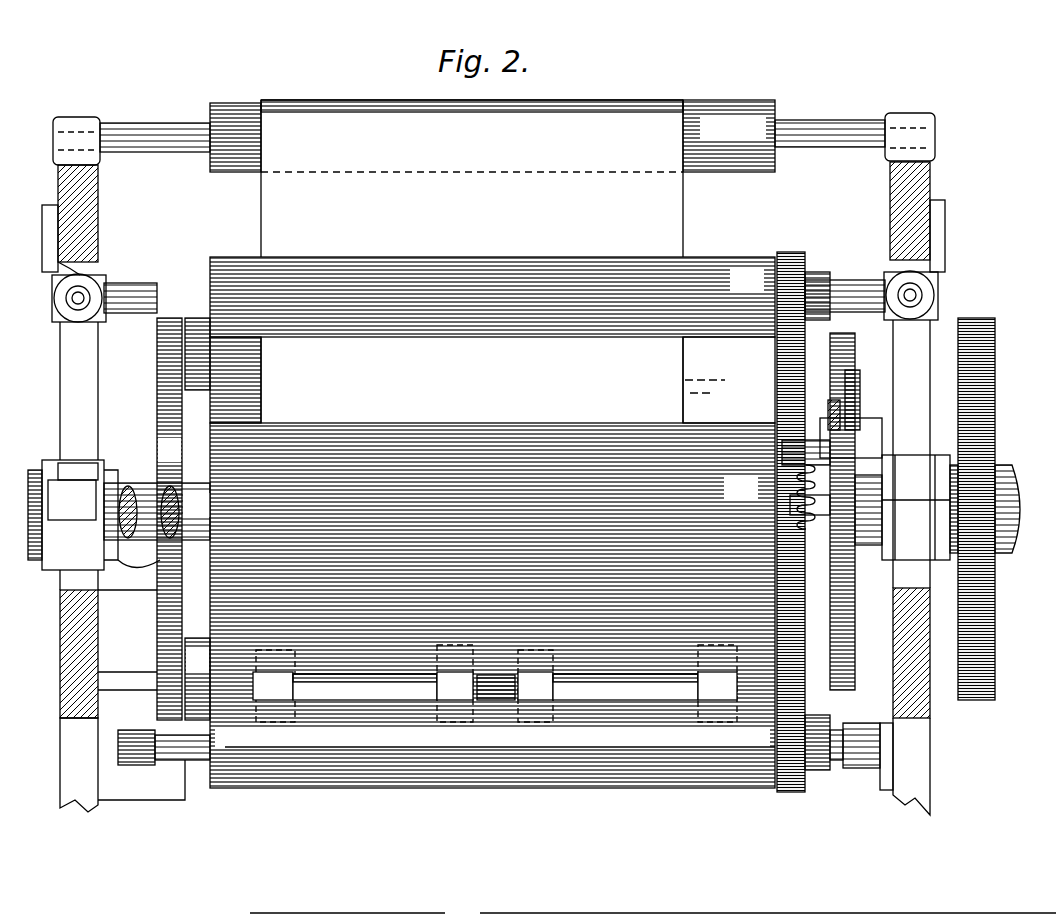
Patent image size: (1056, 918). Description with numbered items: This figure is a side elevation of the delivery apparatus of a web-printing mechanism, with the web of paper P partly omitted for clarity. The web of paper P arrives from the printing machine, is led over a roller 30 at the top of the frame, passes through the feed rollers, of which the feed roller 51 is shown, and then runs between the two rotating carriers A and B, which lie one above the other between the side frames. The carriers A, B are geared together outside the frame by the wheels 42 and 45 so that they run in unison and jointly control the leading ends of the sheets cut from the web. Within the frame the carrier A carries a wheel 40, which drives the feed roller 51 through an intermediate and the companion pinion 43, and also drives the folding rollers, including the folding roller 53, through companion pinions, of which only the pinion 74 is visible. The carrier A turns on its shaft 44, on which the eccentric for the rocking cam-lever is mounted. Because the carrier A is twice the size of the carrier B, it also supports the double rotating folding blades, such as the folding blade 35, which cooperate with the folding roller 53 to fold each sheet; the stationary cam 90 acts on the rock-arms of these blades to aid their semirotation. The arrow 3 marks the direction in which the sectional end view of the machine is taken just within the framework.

The roller 30 is at (492, 136).
The feed roller 51 is at (492, 340).
The companion pinion 43 is at (812, 256).
The wheel 40 is at (830, 358).
The gear wheel 42 is at (1002, 350).
The gear wheel 45 is at (1009, 492).
The stationary cam 90 is at (169, 519).
The shaft 44 is at (119, 515).
The folding blade 35 is at (197, 519).
The folding roller 53 is at (492, 605).
The companion pinion 74 is at (806, 778).
The arrow 3 is at (1037, 283).
The web of paper P is at (472, 178).
The carrier A is at (712, 385).
The carrier B is at (737, 489).